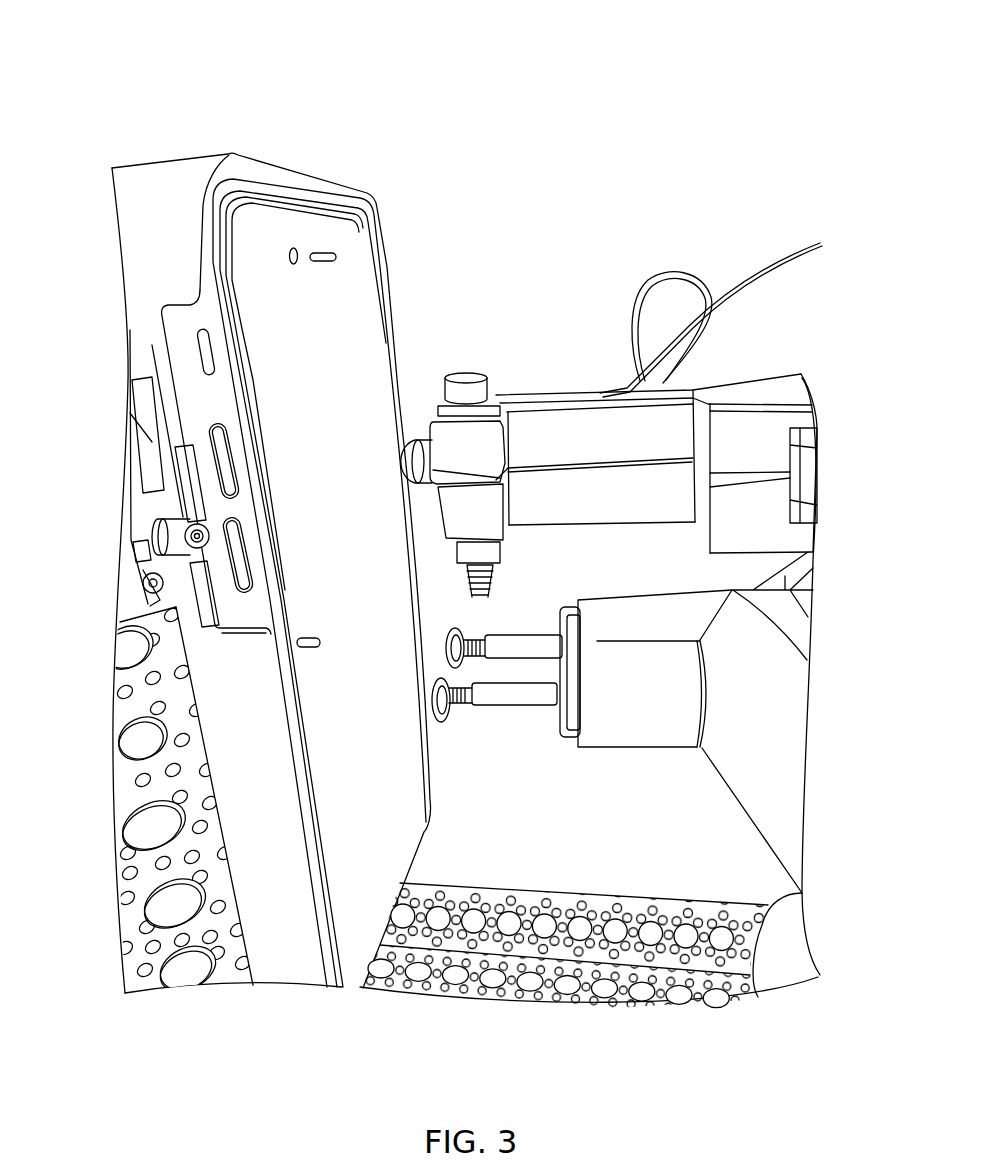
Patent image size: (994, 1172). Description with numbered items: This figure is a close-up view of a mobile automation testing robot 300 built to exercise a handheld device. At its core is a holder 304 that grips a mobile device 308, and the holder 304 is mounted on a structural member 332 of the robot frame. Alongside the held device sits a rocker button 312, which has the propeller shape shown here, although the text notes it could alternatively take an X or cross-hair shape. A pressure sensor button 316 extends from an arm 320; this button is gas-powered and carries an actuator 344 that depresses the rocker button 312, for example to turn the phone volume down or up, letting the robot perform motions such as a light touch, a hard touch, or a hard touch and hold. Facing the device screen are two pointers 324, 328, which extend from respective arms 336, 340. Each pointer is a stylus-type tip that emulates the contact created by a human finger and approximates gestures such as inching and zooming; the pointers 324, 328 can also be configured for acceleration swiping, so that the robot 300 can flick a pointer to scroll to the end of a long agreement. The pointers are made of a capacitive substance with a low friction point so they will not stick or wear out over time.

The mobile automation testing robot 300 is at (533, 76).
The holder 304 is at (180, 161).
The mobile device 308 is at (254, 400).
The rocker button 312 is at (203, 613).
The pressure sensor button 316 is at (410, 440).
The arm 320 is at (533, 396).
The pointer 324 is at (443, 722).
The pointer 328 is at (452, 628).
The structural member 332 is at (122, 923).
The arm 336 is at (604, 748).
The arm 340 is at (610, 600).
The actuator 344 is at (137, 503).